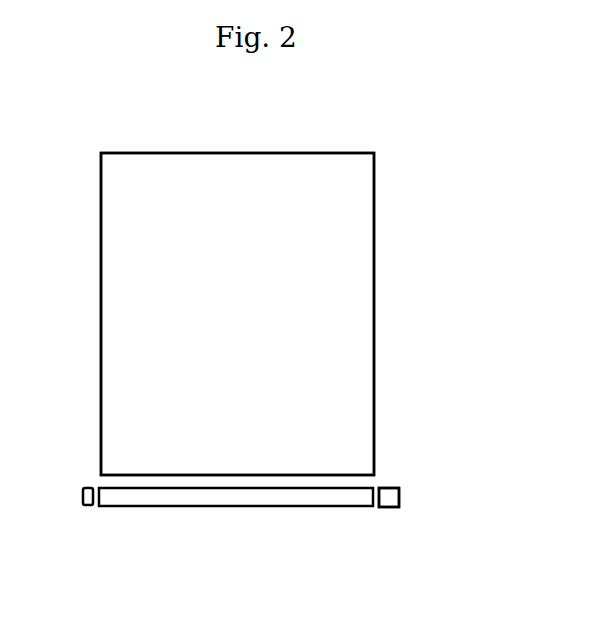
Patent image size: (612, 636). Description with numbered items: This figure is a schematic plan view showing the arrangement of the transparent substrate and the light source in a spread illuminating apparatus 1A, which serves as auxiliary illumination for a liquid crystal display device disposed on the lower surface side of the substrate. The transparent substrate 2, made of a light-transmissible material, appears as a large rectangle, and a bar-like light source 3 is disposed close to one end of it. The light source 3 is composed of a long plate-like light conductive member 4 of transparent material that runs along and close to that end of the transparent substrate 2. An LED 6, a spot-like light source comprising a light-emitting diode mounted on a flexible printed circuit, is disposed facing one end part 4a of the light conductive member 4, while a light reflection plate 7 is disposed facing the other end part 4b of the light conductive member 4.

The spread illuminating apparatus 1A is at (448, 188).
The transparent substrate 2 is at (345, 292).
The bar-like light source 3 is at (407, 496).
The light conductive member 4 is at (308, 500).
The one end part of the light conductive member 4a is at (367, 493).
The other end part of the light conductive member 4b is at (105, 495).
The LED 6 is at (390, 508).
The light reflection plate 7 is at (82, 495).